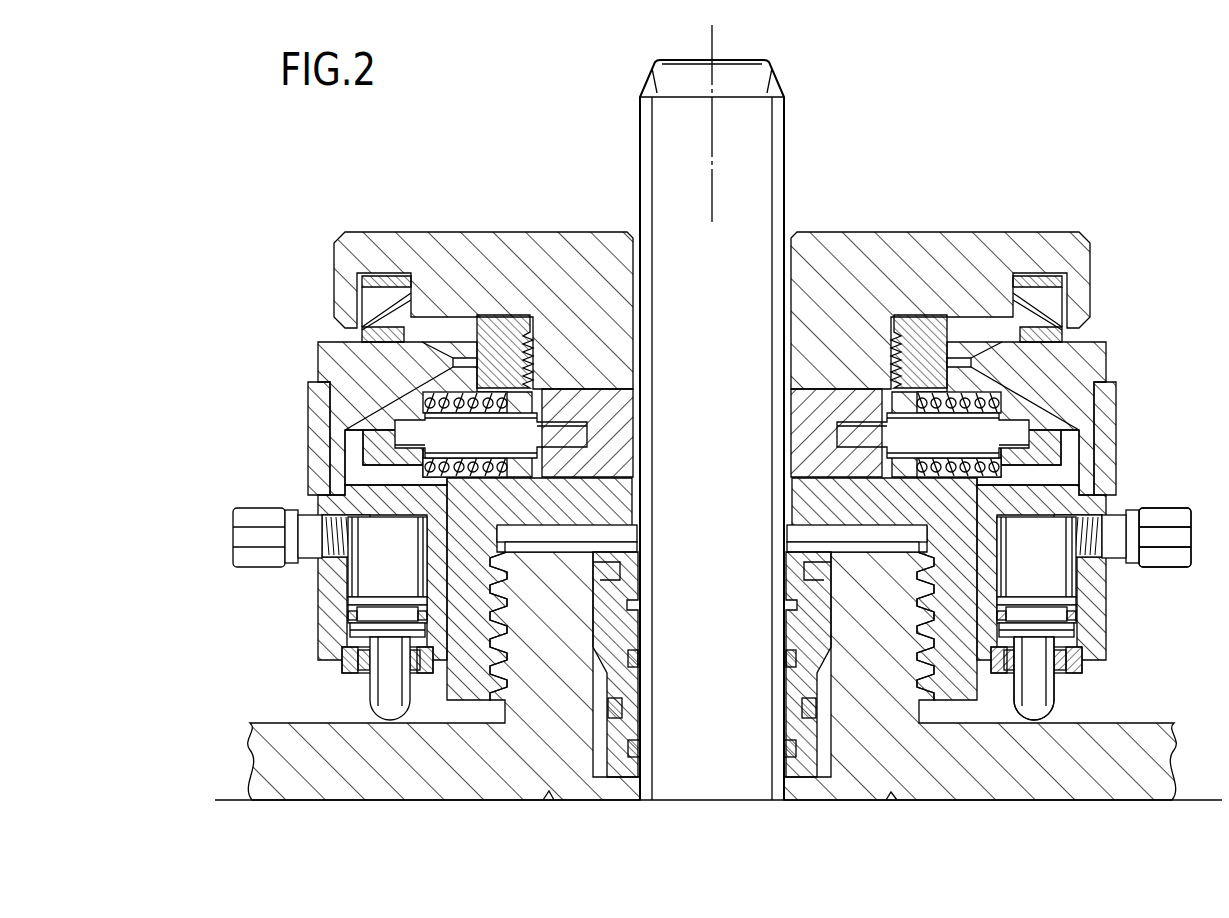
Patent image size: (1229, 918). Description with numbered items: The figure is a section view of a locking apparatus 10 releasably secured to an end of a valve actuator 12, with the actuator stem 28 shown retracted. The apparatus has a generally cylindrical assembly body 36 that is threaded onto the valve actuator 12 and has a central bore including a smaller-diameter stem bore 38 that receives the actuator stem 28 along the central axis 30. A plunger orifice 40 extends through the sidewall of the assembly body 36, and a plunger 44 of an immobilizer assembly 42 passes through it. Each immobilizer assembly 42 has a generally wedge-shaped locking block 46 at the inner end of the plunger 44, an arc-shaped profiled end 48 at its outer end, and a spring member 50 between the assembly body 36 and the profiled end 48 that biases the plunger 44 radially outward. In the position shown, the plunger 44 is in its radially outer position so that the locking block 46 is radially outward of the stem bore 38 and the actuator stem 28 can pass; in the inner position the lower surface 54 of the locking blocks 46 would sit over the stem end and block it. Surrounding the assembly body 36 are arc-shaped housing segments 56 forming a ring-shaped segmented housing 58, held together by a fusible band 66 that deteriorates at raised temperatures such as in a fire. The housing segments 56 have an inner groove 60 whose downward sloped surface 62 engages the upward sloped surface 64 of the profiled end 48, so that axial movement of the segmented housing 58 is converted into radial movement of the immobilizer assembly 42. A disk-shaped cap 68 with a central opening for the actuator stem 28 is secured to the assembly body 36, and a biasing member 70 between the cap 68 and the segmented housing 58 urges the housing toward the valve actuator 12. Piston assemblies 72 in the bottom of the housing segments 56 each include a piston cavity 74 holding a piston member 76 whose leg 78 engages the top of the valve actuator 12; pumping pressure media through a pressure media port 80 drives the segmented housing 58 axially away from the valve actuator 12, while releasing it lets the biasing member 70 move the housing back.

The locking apparatus 10 is at (1066, 177).
The valve actuator 12 is at (1170, 723).
The actuator stem 28 is at (792, 102).
The central axis 30 is at (712, 40).
The assembly body 36 is at (957, 680).
The stem bore 38 is at (788, 492).
The plunger orifice 40 is at (885, 400).
The immobilizer assembly 42 is at (589, 365).
The plunger 44 is at (455, 424).
The locking block 46 is at (825, 400).
The profiled end 48 is at (1038, 427).
The spring member 50 is at (493, 400).
The lower surface 54 is at (570, 482).
The housing segment 56 is at (1088, 365).
The segmented housing 58 is at (1131, 588).
The inner groove 60 is at (1068, 450).
The downward sloped surface 62 is at (1068, 380).
The upward sloped surface 64 is at (385, 402).
The fusible band 66 is at (317, 447).
The cap 68 is at (1075, 248).
The biasing member 70 is at (357, 287).
The piston assembly 72 is at (294, 640).
The piston cavity 74 is at (367, 577).
The piston member 76 is at (1043, 623).
The leg 78 is at (1035, 700).
The pressure media port 80 is at (1155, 513).